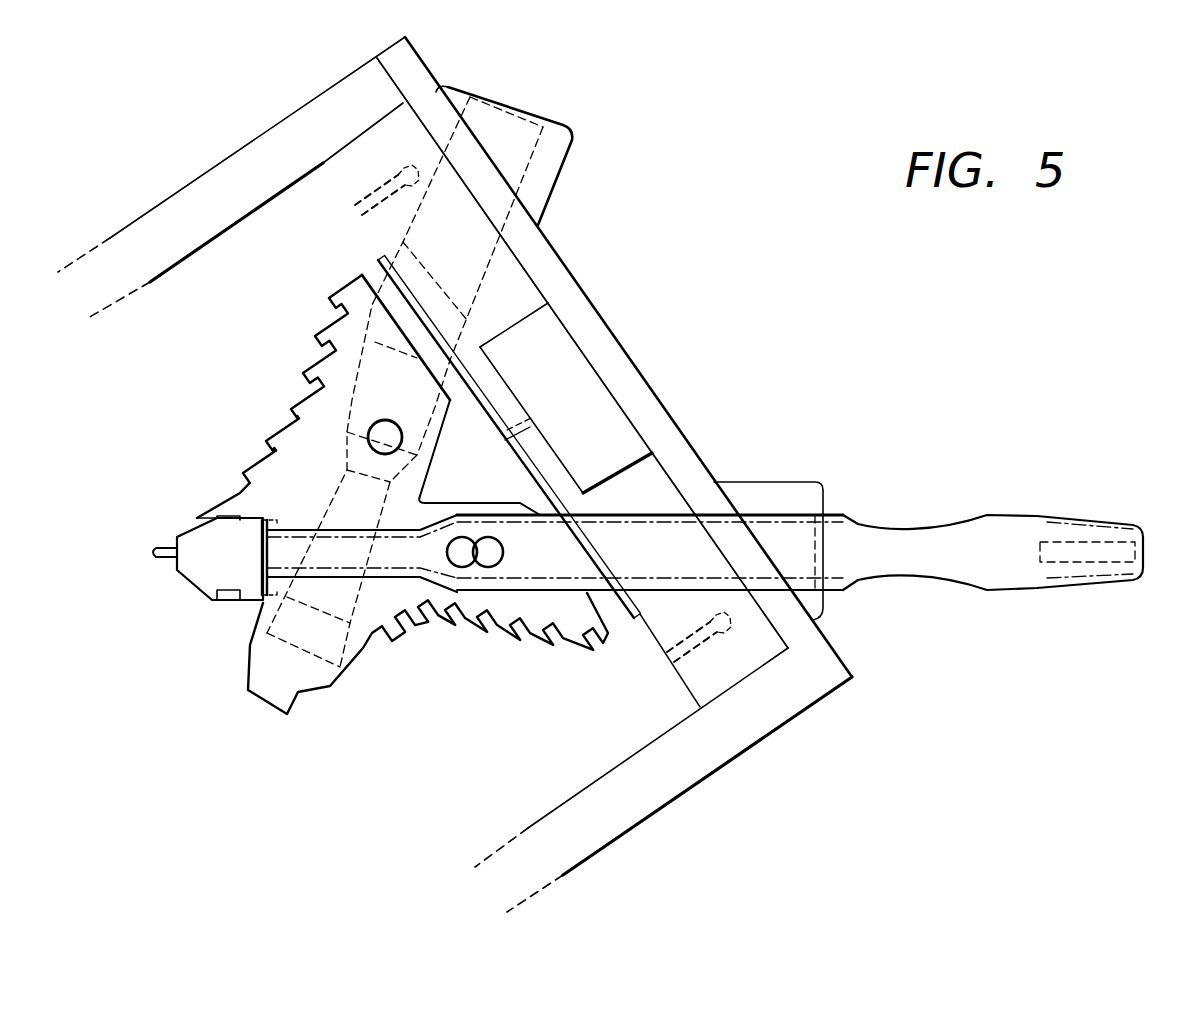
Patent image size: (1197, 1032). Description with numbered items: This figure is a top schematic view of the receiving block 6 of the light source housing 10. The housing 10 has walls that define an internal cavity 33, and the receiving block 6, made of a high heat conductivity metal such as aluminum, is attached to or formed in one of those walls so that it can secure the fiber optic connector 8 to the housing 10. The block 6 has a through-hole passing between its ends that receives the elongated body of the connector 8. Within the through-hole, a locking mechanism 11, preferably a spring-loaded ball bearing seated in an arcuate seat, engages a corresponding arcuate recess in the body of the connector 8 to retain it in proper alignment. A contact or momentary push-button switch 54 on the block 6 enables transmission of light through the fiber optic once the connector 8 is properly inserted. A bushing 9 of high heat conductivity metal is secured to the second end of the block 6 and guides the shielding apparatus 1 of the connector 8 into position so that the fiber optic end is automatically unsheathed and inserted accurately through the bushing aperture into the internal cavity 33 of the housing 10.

The shielding apparatus 1 is at (403, 557).
The receiving block 6 is at (272, 433).
The fiber optic connector 8 is at (888, 532).
The bushing 9 is at (203, 567).
The light source housing 10 is at (660, 843).
The locking mechanism 11 is at (490, 548).
The internal cavity 33 is at (516, 739).
The momentary push-button switch 54 is at (465, 568).